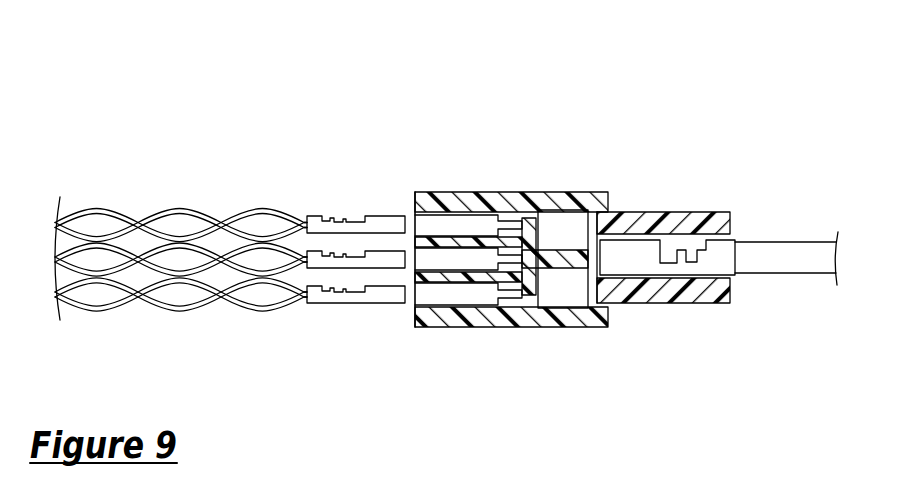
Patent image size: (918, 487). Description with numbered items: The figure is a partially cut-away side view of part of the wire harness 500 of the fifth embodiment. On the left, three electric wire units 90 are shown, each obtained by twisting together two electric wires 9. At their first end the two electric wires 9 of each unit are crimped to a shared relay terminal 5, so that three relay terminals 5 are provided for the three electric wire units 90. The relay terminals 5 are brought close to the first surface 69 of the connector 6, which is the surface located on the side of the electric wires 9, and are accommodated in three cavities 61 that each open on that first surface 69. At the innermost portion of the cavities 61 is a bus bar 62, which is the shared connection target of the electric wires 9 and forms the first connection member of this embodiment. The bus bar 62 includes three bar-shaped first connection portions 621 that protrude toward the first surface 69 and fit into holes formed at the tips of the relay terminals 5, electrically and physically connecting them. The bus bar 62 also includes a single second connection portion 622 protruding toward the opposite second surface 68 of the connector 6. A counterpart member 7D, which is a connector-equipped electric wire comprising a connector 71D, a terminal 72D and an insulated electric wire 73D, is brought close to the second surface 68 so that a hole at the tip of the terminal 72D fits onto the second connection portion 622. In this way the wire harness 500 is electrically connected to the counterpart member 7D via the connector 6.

The wire harness 500 is at (352, 92).
The electric wire 9 is at (181, 240).
The electric wire unit 90 is at (213, 243).
The relay terminal 5 is at (358, 216).
The connector 6 is at (492, 184).
The second surface 68 is at (608, 323).
The first surface 69 is at (415, 200).
The cavity 61 is at (421, 226).
The bus bar 62 is at (551, 237).
The first connection portion 621 is at (523, 221).
The second connection portion 622 is at (580, 249).
The counterpart member 7D is at (793, 180).
The connector 71D is at (688, 212).
The terminal 72D is at (641, 259).
The insulated electric wire 73D is at (787, 274).